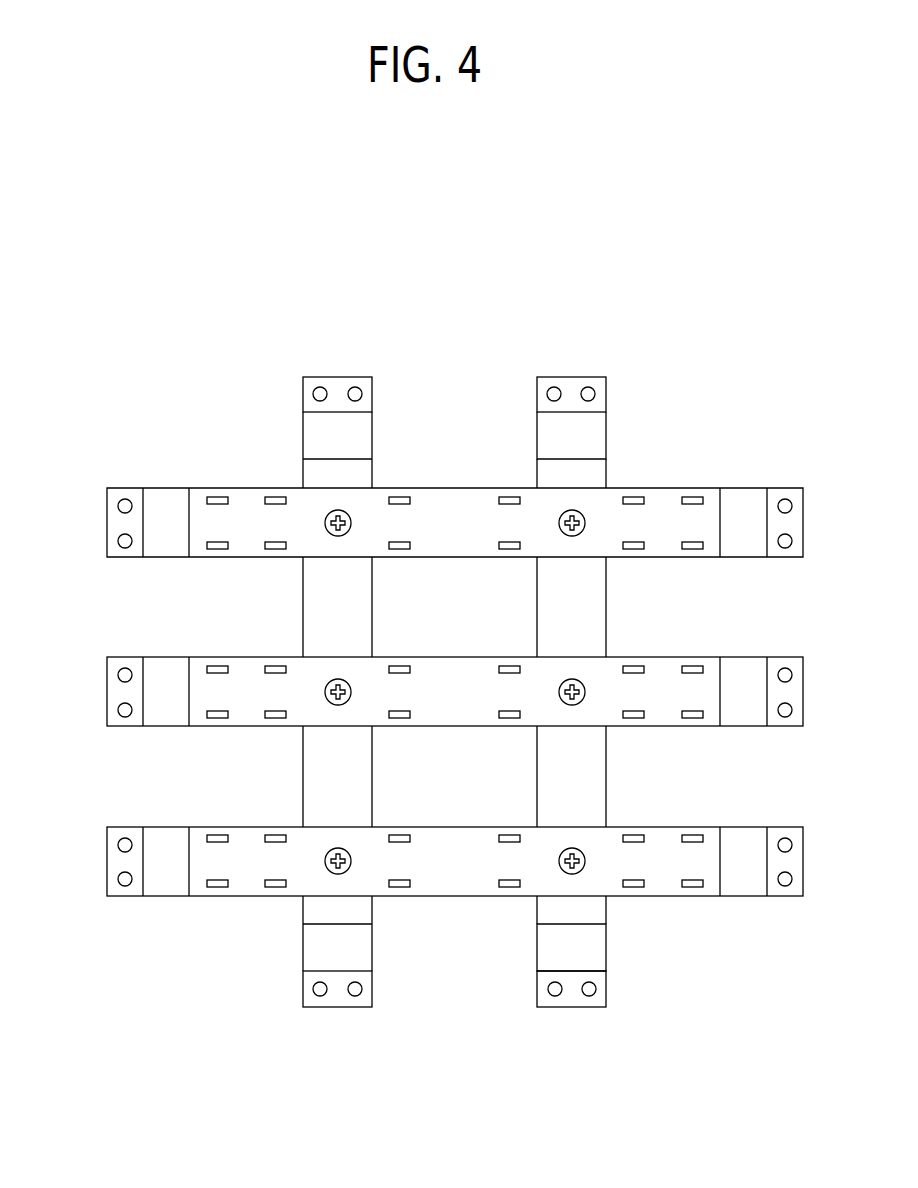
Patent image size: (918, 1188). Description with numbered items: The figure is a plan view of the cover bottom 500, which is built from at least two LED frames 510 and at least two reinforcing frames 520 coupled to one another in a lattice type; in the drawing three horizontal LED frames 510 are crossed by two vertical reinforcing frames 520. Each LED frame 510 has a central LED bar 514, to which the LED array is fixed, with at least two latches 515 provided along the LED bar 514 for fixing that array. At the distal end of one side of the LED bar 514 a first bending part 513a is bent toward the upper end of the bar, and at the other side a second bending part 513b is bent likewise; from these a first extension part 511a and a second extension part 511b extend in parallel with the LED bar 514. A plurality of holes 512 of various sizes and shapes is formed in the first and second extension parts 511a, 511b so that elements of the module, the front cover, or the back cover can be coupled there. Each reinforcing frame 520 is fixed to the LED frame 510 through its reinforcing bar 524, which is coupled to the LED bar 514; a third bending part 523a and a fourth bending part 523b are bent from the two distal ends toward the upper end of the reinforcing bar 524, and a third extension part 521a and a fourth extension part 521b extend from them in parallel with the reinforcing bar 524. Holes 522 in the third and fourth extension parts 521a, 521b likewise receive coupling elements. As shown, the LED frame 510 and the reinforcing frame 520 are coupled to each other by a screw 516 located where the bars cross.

The cover bottom 500 is at (178, 284).
The LED frame 510 is at (106, 858).
The first extension part 511a is at (130, 488).
The second extension part 511b is at (785, 558).
The hole 512 is at (121, 507).
The first bending part 513a is at (162, 558).
The second bending part 513b is at (743, 488).
The LED bar 514 is at (245, 558).
The latch 515 is at (228, 499).
The screw 516 is at (560, 529).
The reinforcing frame 520 is at (352, 376).
The third extension part 521a is at (607, 398).
The fourth extension part 521b is at (607, 989).
The hole 522 is at (589, 392).
The third bending part 523a is at (607, 440).
The fourth bending part 523b is at (607, 952).
The reinforcing bar 524 is at (607, 601).